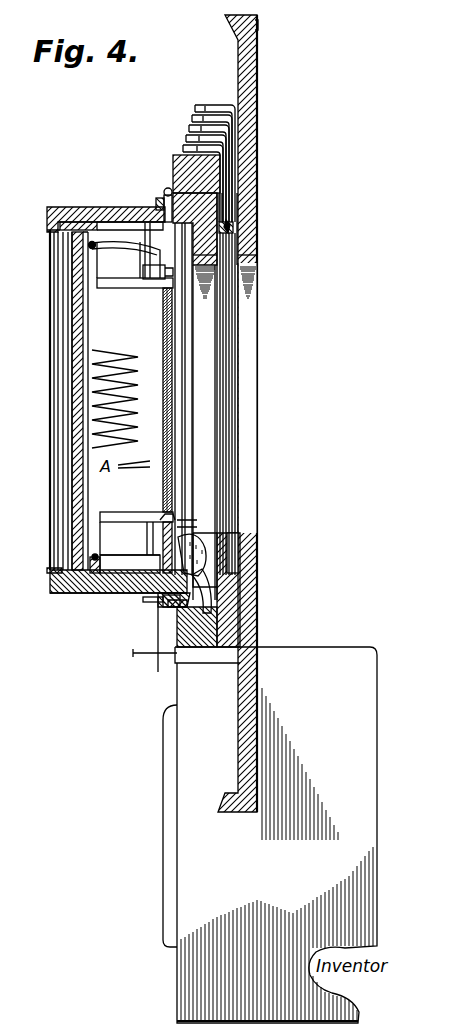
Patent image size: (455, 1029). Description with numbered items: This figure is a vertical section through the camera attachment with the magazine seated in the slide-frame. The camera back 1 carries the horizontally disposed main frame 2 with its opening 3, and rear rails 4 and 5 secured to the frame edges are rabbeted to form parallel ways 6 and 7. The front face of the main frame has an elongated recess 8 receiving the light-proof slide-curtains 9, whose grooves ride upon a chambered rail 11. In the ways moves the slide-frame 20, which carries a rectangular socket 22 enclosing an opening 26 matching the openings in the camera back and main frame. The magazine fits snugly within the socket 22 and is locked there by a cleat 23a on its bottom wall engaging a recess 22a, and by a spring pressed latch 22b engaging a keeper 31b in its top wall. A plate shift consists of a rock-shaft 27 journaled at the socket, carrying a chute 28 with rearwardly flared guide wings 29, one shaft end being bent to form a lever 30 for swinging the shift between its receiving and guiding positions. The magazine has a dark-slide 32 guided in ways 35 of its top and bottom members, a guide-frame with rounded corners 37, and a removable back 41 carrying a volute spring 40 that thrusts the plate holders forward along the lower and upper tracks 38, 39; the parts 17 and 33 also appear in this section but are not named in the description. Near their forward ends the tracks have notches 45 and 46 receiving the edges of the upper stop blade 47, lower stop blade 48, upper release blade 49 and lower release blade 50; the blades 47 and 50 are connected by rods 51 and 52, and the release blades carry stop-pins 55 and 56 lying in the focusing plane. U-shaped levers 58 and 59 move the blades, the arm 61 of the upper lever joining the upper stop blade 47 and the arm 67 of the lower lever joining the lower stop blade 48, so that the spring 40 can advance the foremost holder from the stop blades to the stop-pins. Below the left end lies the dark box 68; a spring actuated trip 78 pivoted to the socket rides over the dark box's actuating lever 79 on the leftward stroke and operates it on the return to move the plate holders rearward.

The camera back 1 is at (248, 82).
The main frame 2 is at (250, 245).
The opening 3 is at (248, 333).
The rear rail 4 is at (190, 172).
The rear rail 5 is at (208, 632).
The way 6 is at (224, 182).
The way 7 is at (224, 205).
The elongated recess 8 is at (228, 566).
The slide-curtains 9 is at (236, 450).
The chambered rail 11 is at (234, 233).
The contact strips 17 is at (196, 118).
The slide-frame 20 is at (258, 257).
The rectangular socket 22 is at (158, 201).
The recess 22a is at (210, 602).
The spring pressed latch 22b is at (166, 193).
The cleat 23a is at (175, 605).
The opening 26 is at (193, 387).
The rock-shaft 27 is at (218, 584).
The chute 28 is at (198, 548).
The guide wings 29 is at (237, 516).
The lever 30 is at (143, 600).
The keeper 31b is at (219, 200).
The dark-slide 32 is at (58, 518).
The casing lining 33 is at (60, 477).
The ways 35 is at (56, 215).
The rounded corners 37 is at (55, 448).
The lower track 38 is at (118, 514).
The upper track 39 is at (110, 282).
The volute spring 40 is at (95, 370).
The removable back 41 is at (76, 303).
The notch 45 is at (168, 293).
The notch 46 is at (168, 518).
The upper stop blade 47 is at (150, 248).
The lower stop blade 48 is at (125, 564).
The upper release blade 49 is at (160, 214).
The lower release blade 50 is at (135, 584).
The rod 51 is at (171, 420).
The rod 52 is at (171, 456).
The stop-pin 55 is at (238, 294).
The stop-pin 56 is at (183, 523).
The U-shaped lever 58 is at (90, 246).
The U-shaped lever 59 is at (88, 596).
The arm 61 is at (95, 240).
The arm 67 is at (118, 548).
The dark box 68 is at (277, 835).
The spring actuated trip 78 is at (158, 675).
The actuating lever 79 is at (135, 655).